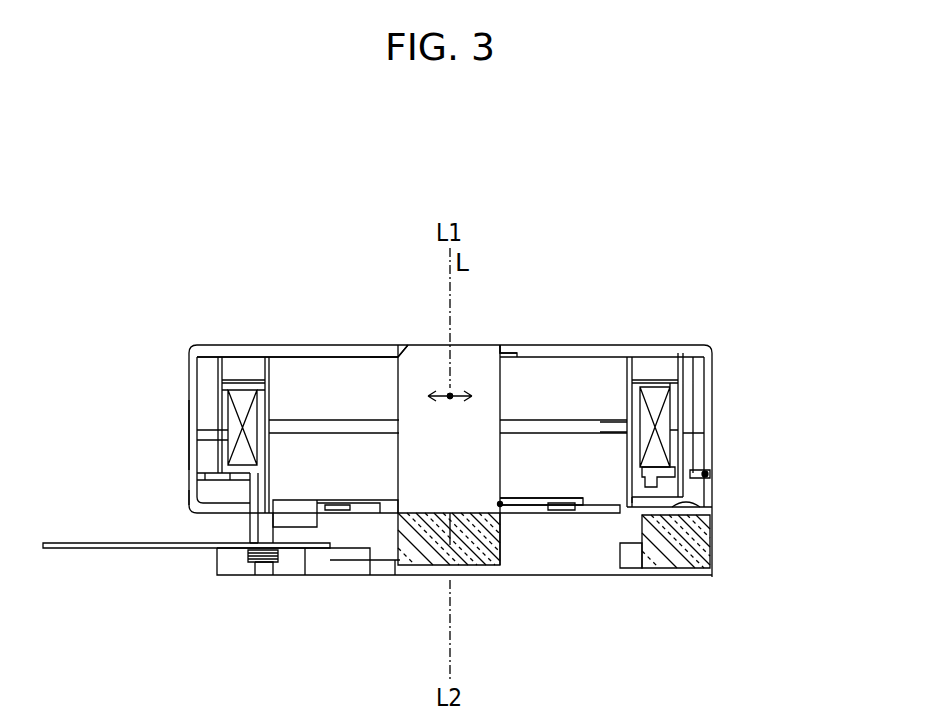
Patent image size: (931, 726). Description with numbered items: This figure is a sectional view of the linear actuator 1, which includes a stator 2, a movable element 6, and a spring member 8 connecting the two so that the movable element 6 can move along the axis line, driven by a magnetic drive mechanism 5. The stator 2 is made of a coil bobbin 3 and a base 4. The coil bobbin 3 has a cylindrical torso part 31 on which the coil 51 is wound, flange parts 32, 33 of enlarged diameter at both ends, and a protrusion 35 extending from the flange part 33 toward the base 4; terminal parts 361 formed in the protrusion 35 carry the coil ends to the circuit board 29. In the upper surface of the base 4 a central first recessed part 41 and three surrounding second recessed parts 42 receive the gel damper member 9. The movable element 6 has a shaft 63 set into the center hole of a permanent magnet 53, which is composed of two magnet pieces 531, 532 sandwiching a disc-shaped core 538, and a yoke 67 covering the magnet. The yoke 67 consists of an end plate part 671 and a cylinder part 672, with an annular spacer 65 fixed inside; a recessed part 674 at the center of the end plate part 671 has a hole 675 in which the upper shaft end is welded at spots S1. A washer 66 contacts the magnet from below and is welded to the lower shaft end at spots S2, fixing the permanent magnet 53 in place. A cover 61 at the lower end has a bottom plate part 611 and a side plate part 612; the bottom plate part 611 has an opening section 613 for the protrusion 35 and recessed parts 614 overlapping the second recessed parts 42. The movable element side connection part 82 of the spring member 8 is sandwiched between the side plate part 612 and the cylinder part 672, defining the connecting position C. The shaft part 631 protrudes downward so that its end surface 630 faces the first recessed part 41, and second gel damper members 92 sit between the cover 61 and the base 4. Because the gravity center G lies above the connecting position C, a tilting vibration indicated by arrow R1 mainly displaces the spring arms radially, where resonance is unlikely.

The linear actuator 1 is at (711, 310).
The stator 2 is at (340, 614).
The coil bobbin 3 is at (290, 550).
The base 4 is at (343, 555).
The magnetic drive mechanism 5 is at (810, 340).
The movable element 6 is at (80, 333).
The spring member 8 is at (672, 482).
The gel damper member 9 is at (426, 560).
The circuit board 29 is at (61, 543).
The torso part 31 is at (623, 436).
The flange part 32 is at (645, 358).
The flange part 33 is at (628, 469).
The protrusion 35 is at (261, 519).
The first recessed part 41 is at (394, 574).
The second recessed part 42 is at (628, 567).
The coil 51 is at (657, 456).
The permanent magnet 53 is at (772, 340).
The cover 61 is at (198, 484).
The shaft 63 is at (242, 401).
The spacer 65 is at (222, 379).
The washer 66 is at (387, 497).
The yoke 67 is at (205, 362).
The movable element side connection part 82 is at (704, 488).
The second gel damper member 92 is at (700, 545).
The terminal part 361 is at (266, 567).
The magnet piece 531 is at (645, 392).
The magnet piece 532 is at (640, 460).
The core 538 is at (590, 420).
The bottom plate part 611 is at (253, 508).
The side plate part 612 is at (190, 500).
The opening section 613 is at (261, 510).
The recessed part 614 is at (700, 510).
The end surface 630 is at (497, 537).
The shaft part 631 is at (455, 547).
The end plate part 671 is at (282, 345).
The cylinder part 672 is at (192, 417).
The recessed part 674 is at (381, 355).
The hole 675 is at (410, 345).
The connecting position C is at (713, 474).
The gravity center G is at (452, 390).
The tilting vibration arrow R1 is at (453, 408).
The welding spots S1 is at (503, 345).
The welding spots S2 is at (500, 502).